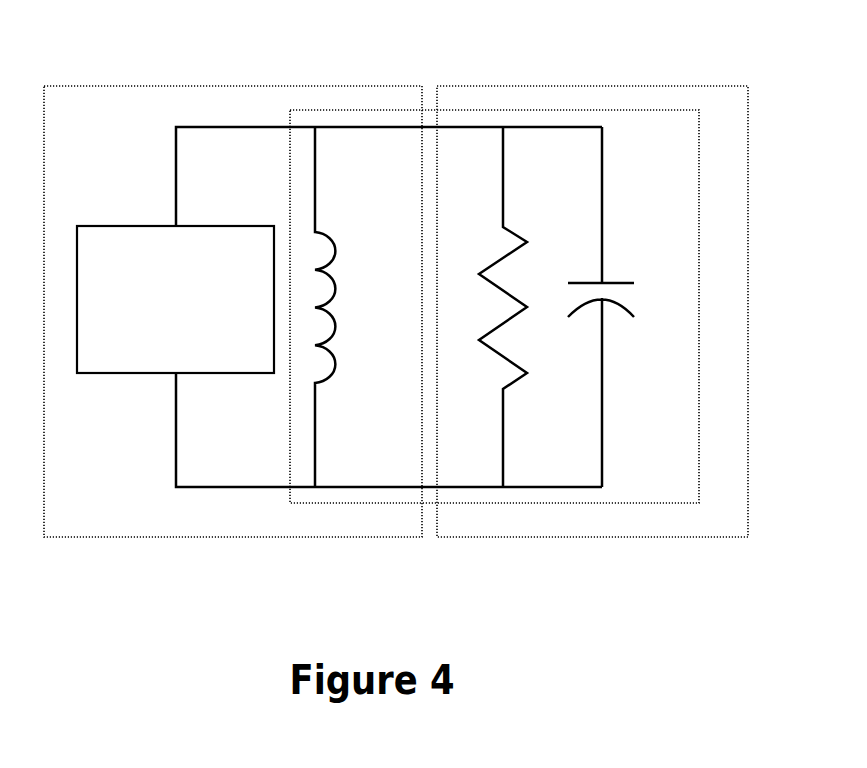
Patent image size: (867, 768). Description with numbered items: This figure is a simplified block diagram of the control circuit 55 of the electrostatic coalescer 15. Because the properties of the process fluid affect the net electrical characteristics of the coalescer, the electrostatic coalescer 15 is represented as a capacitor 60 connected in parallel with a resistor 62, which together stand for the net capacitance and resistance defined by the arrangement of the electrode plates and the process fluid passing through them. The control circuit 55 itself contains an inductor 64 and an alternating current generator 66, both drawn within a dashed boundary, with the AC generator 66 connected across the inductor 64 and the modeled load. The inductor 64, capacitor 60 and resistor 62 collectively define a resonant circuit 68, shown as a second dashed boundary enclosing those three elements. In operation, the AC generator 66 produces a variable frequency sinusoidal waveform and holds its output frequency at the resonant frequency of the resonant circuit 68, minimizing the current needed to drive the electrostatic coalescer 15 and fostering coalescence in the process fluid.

The electrostatic coalescer 15 is at (551, 86).
The control circuit 55 is at (207, 86).
The capacitor 60 is at (622, 283).
The resistor 62 is at (515, 232).
The inductor 64 is at (323, 232).
The alternating current (AC) generator 66 is at (161, 327).
The resonant circuit 68 is at (376, 503).